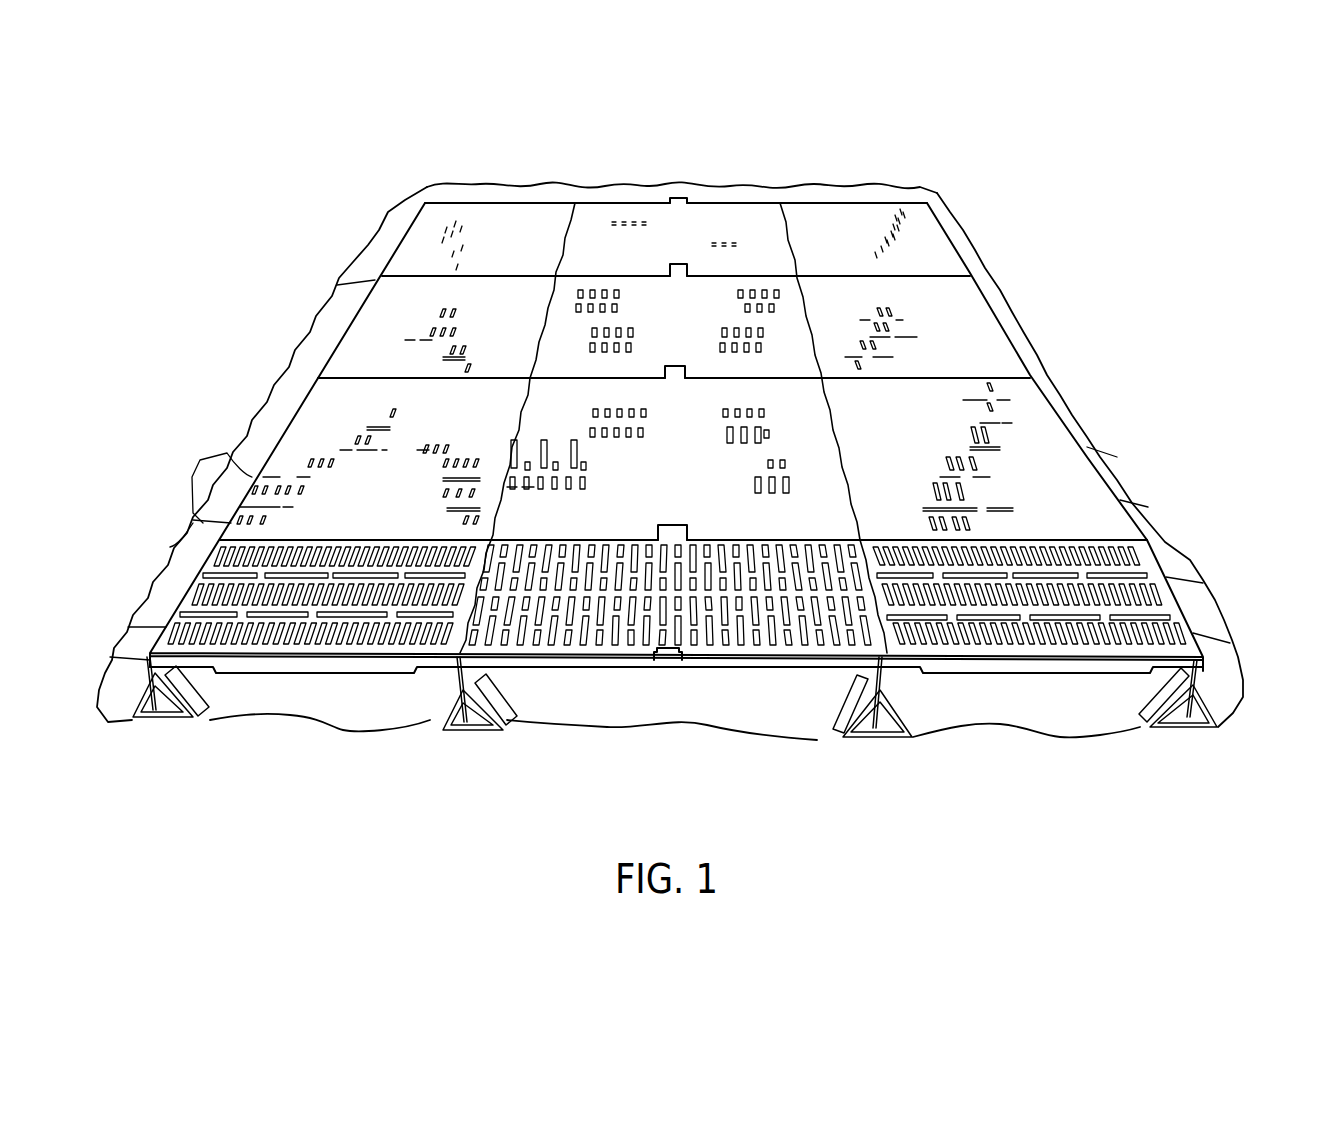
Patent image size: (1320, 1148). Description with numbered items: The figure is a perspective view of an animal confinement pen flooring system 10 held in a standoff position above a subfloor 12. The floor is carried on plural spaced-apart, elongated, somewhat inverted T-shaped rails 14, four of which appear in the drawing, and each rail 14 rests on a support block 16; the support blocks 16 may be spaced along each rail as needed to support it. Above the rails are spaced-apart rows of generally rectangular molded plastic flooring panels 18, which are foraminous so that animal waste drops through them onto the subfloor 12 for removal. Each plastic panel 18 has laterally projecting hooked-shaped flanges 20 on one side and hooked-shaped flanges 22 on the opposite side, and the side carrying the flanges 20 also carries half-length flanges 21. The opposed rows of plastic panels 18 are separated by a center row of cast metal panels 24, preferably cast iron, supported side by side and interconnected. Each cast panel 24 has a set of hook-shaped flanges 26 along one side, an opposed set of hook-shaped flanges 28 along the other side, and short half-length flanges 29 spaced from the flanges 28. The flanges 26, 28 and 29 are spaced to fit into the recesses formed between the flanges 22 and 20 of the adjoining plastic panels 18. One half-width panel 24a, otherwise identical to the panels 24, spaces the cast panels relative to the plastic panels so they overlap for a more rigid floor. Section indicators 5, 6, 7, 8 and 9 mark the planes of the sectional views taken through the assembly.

The flooring system 10 is at (1075, 288).
The subfloor 12 is at (1197, 540).
The rails 14 is at (150, 657).
The support blocks 16 is at (207, 720).
The flooring panels 18 is at (378, 258).
The hooked shaped flanges 20 is at (483, 592).
The half length flanges 21 is at (483, 578).
The hooked shaped flanges 22 is at (227, 453).
The cast metal flooring panels 24 is at (537, 320).
The half-width panel 24a is at (708, 198).
The hook-shaped flanges 26 is at (830, 440).
The hook shaped flanges 28 is at (532, 373).
The half length flanges 29 is at (470, 518).
The section line 5- 5 is at (427, 510).
The section line 6- 6 is at (495, 423).
The section line 7- 7 is at (803, 508).
The section line 8- 8 is at (810, 423).
The section line 9- 9 is at (677, 540).